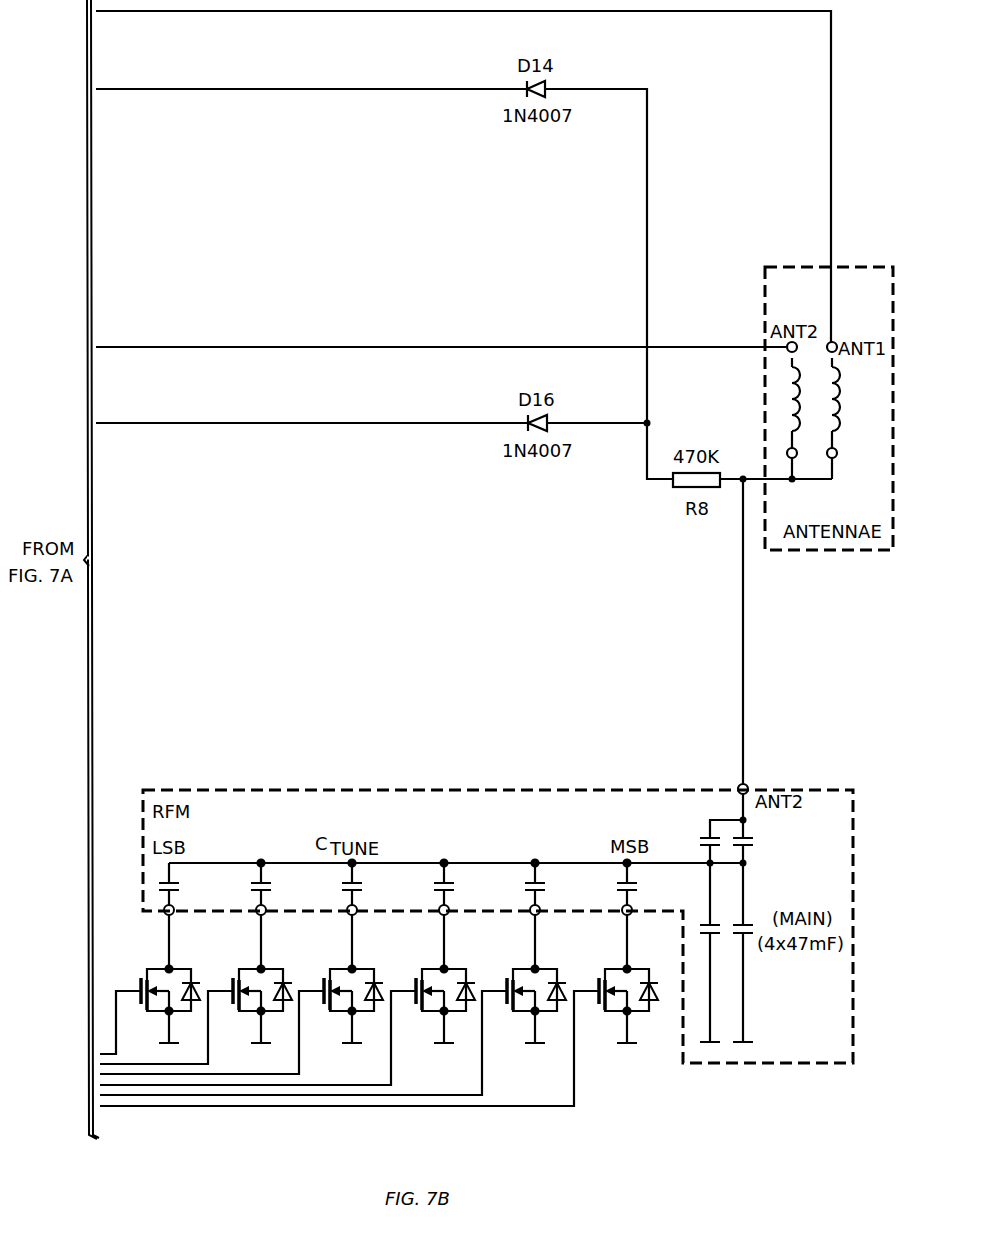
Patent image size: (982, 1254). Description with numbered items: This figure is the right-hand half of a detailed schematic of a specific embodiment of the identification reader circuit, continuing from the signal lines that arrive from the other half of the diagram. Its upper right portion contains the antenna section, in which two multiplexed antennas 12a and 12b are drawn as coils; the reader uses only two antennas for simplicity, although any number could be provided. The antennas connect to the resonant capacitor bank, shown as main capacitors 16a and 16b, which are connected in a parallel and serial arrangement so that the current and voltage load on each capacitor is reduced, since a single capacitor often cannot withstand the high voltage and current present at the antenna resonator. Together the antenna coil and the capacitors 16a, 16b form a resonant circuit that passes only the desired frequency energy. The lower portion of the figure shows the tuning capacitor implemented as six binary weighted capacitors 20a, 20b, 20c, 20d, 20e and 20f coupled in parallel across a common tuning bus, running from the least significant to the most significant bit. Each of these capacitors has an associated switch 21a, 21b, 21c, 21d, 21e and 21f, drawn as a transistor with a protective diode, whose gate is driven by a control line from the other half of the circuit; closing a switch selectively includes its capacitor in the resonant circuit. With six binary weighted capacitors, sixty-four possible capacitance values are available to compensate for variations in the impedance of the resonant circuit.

The antenna 12a is at (838, 435).
The antenna 12b is at (797, 402).
The capacitor 16a is at (757, 841).
The capacitor 16b is at (752, 918).
The binary weighted capacitor 20a is at (181, 884).
The binary weighted capacitor 20b is at (273, 884).
The binary weighted capacitor 20c is at (364, 884).
The binary weighted capacitor 20d is at (456, 884).
The binary weighted capacitor 20e is at (547, 884).
The binary weighted capacitor 20f is at (639, 884).
The switch 21a is at (173, 966).
The switch 21b is at (265, 966).
The switch 21c is at (356, 966).
The switch 21d is at (448, 966).
The switch 21e is at (539, 966).
The switch 21f is at (631, 966).